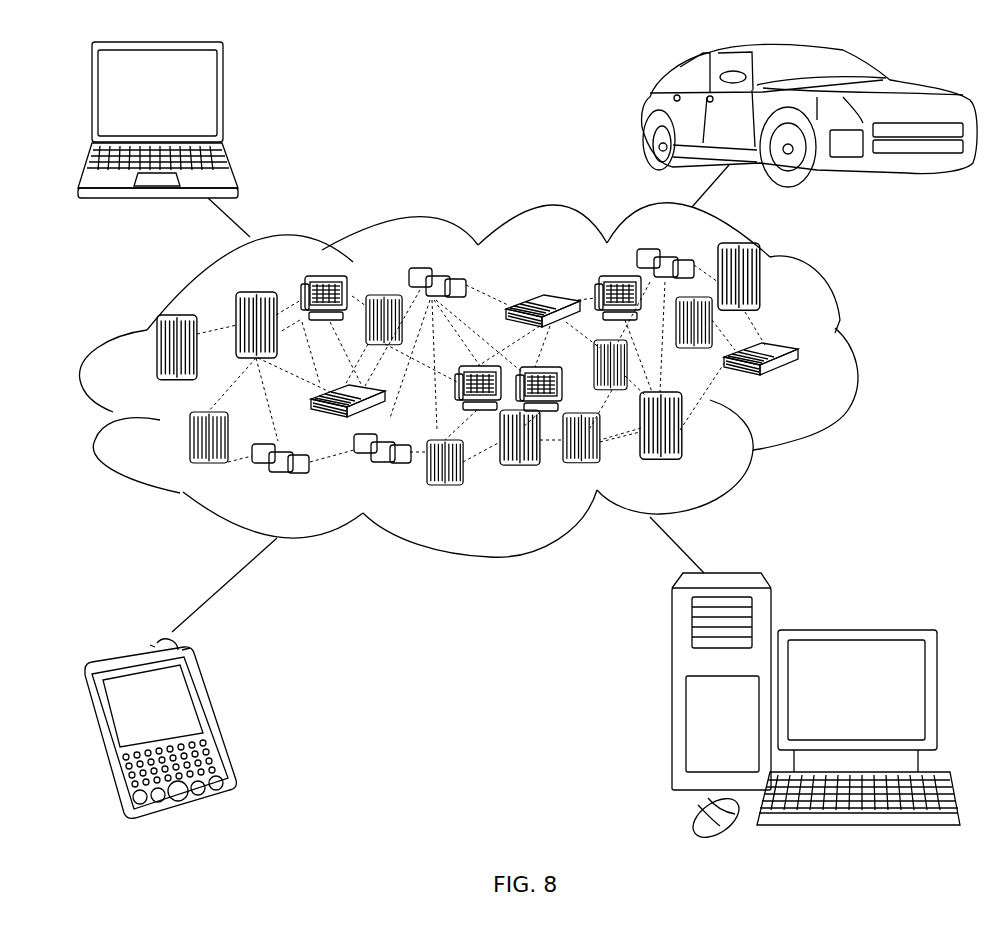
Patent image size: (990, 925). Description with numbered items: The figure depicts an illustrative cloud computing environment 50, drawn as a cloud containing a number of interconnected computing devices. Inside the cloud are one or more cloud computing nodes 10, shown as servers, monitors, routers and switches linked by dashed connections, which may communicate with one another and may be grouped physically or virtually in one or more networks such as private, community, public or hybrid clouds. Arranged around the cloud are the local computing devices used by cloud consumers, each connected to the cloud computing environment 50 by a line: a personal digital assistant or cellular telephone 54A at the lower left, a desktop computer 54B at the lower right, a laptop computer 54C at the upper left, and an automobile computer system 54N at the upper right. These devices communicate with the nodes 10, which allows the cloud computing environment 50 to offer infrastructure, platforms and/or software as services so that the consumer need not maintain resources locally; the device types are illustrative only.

The cloud computing nodes 10 is at (847, 406).
The cloud computing environment 50 is at (857, 353).
The personal digital assistant (PDA) or cellular telephone 54A is at (213, 717).
The desktop computer 54B is at (853, 630).
The laptop computer 54C is at (225, 98).
The automobile computer system 54N is at (643, 115).